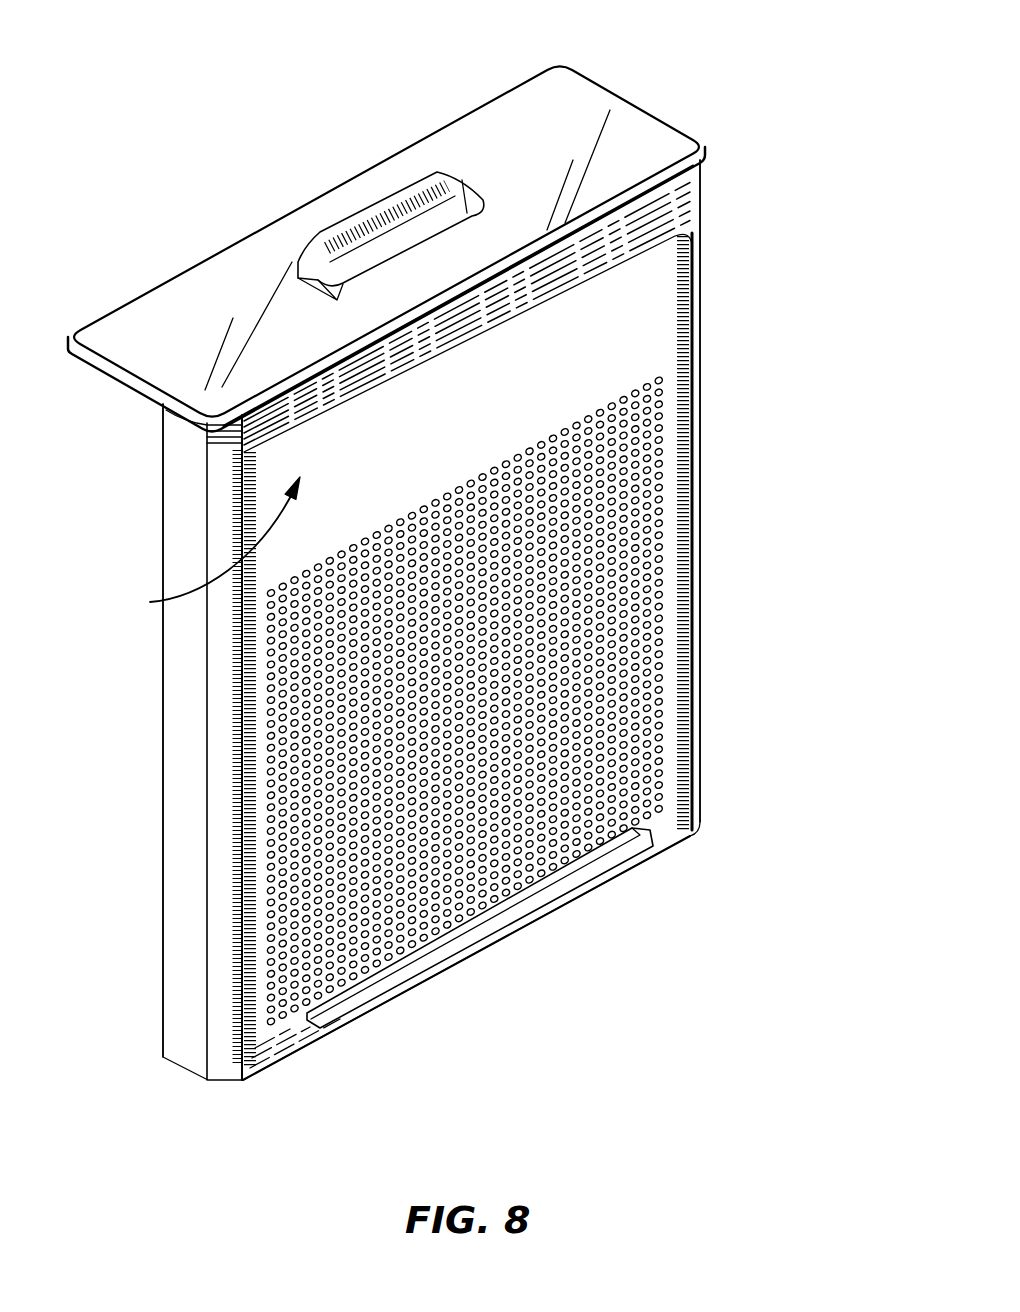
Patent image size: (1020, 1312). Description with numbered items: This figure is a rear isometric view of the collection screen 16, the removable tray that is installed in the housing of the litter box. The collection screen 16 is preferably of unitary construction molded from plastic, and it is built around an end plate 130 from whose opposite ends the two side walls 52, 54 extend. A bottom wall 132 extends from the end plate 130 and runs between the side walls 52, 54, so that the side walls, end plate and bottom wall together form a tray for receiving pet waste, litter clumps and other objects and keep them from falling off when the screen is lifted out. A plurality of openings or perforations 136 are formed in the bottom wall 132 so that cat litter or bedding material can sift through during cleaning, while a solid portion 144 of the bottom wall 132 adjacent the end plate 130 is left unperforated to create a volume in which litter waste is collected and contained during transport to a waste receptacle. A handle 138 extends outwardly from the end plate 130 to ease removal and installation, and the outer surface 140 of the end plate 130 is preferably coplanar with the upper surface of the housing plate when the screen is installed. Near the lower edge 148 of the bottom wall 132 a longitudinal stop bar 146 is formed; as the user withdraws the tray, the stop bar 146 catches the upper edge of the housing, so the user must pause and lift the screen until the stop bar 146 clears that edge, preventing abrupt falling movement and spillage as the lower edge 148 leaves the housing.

The collection screen 16 is at (667, 97).
The side wall 52 is at (703, 216).
The side wall 54 is at (183, 517).
The end plate 130 is at (455, 147).
The bottom wall 132 is at (660, 254).
The openings or perforations 136 is at (663, 722).
The handle 138 is at (347, 240).
The outer surface 140 is at (308, 369).
The solid portion 144 is at (150, 602).
The longitudinal stop bar 146 is at (600, 857).
The lower edge 148 is at (272, 1065).